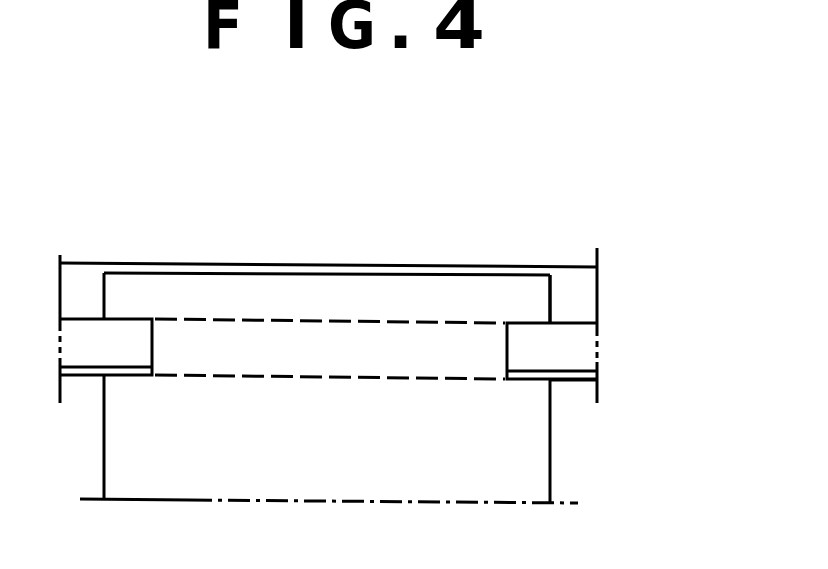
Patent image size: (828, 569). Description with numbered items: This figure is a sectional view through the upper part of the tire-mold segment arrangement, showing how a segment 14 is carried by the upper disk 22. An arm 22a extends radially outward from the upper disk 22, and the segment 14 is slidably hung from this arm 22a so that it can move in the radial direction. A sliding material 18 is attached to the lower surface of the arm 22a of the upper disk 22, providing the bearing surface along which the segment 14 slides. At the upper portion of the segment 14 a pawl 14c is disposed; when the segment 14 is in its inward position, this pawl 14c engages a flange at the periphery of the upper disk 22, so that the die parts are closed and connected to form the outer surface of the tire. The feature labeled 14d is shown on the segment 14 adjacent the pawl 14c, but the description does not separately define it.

The segment 14 is at (527, 477).
The pawl 14c is at (361, 293).
The side wall of holder 14d is at (530, 293).
The upper disk 22 is at (572, 297).
The arm 22a is at (564, 351).
The sliding material 18 is at (572, 383).